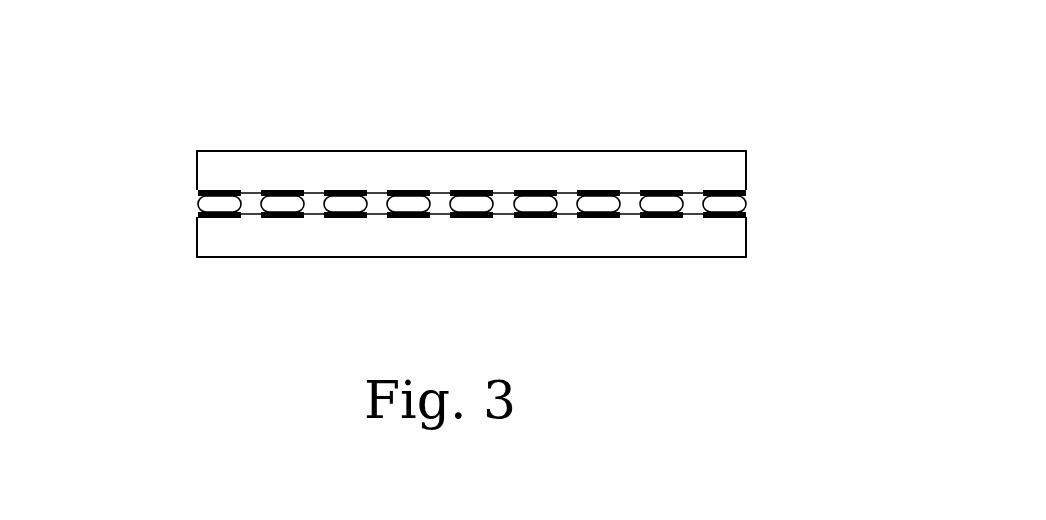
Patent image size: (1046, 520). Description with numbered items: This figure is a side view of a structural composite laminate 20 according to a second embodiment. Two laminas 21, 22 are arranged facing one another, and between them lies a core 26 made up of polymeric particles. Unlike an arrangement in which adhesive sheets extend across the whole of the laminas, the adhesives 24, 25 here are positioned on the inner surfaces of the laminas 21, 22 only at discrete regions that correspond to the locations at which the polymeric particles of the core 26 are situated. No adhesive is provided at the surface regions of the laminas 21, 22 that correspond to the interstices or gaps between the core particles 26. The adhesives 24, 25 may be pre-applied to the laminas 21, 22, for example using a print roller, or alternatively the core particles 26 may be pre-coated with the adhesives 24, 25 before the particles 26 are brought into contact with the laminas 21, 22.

The composite laminate 20 is at (582, 125).
The lamina 21 is at (307, 173).
The lamina 22 is at (682, 243).
The adhesive 24 is at (197, 198).
The adhesive 25 is at (197, 220).
The core 26 is at (746, 212).